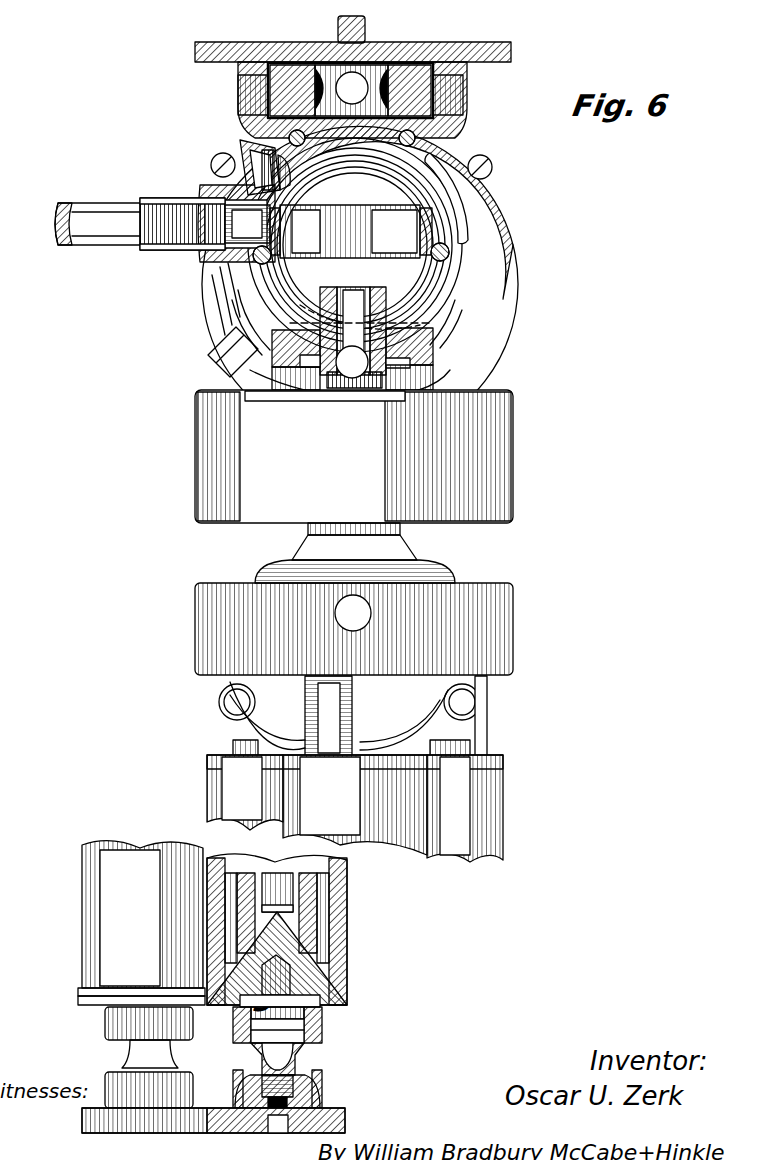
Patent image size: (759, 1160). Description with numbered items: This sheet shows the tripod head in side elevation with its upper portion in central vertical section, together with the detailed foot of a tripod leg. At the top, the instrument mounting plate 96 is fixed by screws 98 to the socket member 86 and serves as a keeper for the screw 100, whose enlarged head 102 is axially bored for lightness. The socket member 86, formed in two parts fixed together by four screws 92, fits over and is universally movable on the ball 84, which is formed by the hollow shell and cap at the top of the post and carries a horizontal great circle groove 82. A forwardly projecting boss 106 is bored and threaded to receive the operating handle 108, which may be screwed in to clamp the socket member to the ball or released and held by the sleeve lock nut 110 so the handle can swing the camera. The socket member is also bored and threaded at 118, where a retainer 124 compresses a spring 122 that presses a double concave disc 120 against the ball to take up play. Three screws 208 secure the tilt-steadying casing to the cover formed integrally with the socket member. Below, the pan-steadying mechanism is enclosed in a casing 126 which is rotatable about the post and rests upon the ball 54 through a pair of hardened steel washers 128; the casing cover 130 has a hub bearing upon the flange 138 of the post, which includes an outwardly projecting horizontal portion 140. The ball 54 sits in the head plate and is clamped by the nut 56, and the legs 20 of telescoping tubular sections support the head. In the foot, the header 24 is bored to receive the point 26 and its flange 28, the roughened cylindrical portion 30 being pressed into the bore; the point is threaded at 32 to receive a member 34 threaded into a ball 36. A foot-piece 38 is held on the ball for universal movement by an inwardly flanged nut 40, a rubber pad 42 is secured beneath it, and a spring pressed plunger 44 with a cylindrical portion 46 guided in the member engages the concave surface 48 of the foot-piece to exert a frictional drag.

In FIG. 6, the screw 100 is at (365, 36).
In FIG. 6, the instrument mounting plate 96 is at (511, 50).
In FIG. 6, the screws 98 is at (238, 78).
In FIG. 6, the enlarged head 102 is at (420, 92).
In FIG. 6, the socket member 86 is at (462, 98).
In FIG. 6, the ball 84 is at (400, 275).
In FIG. 6, the screws 208 is at (490, 160).
In FIG. 6, the great circle groove 82 is at (432, 222).
In FIG. 6, the screws 92 is at (448, 252).
In FIG. 6, the outwardly projecting horizontal portion 140 is at (390, 325).
In FIG. 6, the flange 138 is at (400, 362).
In FIG. 6, the casing 126 is at (240, 505).
In FIG. 6, the hardened steel washers 128 is at (306, 532).
In FIG. 6, the ball 54 is at (414, 548).
In FIG. 6, the nut 56 is at (513, 640).
In FIG. 6, the casing cover 130 is at (503, 760).
In FIG. 6, the legs 20 is at (215, 782).
In FIG. 7, the legs 20 is at (175, 848).
In FIG. 6, the operating handle 108 is at (120, 200).
In FIG. 6, the sleeve lock nut 110 is at (160, 196).
In FIG. 6, the boss 106 is at (230, 203).
In FIG. 6, the threaded bore 118 is at (262, 150).
In FIG. 6, the retainer 124 is at (262, 165).
In FIG. 6, the spring 122 is at (284, 170).
In FIG. 6, the double concave disc 120 is at (223, 165).
In FIG. 7, the member 34 is at (105, 1025).
In FIG. 7, the cylindrical portion 30 is at (290, 970).
In FIG. 7, the header 24 is at (300, 1022).
In FIG. 7, the flange 28 is at (240, 1015).
In FIG. 7, the thread 32 is at (300, 1052).
In FIG. 7, the point 26 is at (268, 1046).
In FIG. 7, the ball 36 is at (300, 1068).
In FIG. 7, the cylindrical portion 46 is at (293, 1085).
In FIG. 7, the concave surface 48 is at (295, 1098).
In FIG. 7, the inwardly flanged nut 40 is at (233, 1085).
In FIG. 7, the foot-piece 38 is at (218, 1133).
In FIG. 7, the pad 42 is at (258, 1133).
In FIG. 7, the spring pressed plunger 44 is at (276, 1133).